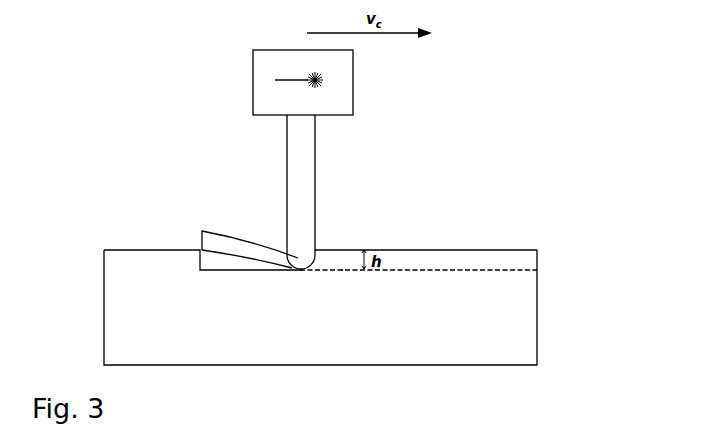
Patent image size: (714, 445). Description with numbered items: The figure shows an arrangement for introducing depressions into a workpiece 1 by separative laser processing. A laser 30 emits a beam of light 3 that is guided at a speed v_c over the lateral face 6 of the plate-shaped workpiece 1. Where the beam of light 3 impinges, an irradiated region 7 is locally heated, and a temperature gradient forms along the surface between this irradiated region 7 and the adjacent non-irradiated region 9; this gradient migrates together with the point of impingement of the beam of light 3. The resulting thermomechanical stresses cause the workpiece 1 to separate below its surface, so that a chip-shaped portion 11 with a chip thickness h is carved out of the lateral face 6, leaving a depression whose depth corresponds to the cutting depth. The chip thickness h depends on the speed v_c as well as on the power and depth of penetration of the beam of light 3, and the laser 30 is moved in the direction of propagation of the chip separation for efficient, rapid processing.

The workpiece 1 is at (118, 236).
The beam of light 3 is at (315, 170).
The lateral face 6 is at (508, 250).
The irradiated region 7 is at (300, 270).
The non-irradiated region 9 is at (342, 270).
The portion of the workpiece 11 is at (226, 240).
The laser 30 is at (353, 85).